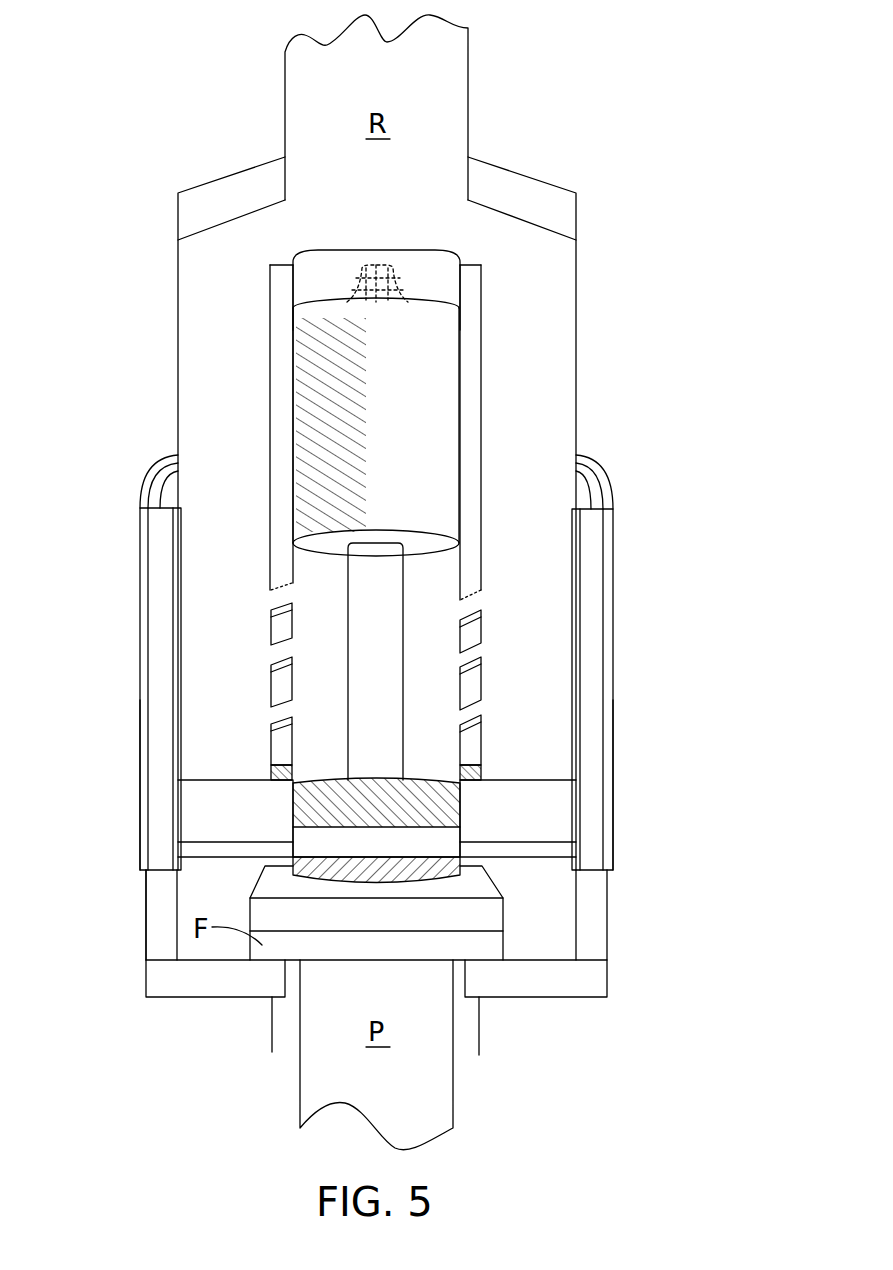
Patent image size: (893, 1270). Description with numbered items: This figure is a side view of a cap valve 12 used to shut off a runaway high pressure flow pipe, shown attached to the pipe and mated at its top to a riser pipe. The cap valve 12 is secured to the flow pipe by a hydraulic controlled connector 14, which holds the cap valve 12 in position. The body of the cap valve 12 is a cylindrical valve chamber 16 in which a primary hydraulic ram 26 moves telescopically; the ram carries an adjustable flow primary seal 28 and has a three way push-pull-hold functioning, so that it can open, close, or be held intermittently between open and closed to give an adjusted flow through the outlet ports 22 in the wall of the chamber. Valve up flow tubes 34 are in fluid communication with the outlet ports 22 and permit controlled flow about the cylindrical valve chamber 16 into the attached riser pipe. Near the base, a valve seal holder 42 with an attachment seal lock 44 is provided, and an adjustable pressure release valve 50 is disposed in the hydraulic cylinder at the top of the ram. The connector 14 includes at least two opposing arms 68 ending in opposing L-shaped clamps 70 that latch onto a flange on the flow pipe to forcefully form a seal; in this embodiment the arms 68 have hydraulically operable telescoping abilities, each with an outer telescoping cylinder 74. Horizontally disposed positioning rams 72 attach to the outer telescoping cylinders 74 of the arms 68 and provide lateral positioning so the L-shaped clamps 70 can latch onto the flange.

The cap valve 12 is at (641, 276).
The hydraulic controlled connector 14 is at (709, 755).
The cylindrical valve chamber 16 is at (462, 385).
The outlet ports 22 is at (482, 603).
The primary hydraulic ram 26 is at (392, 426).
The adjustable flow primary seal 28 is at (465, 800).
The valve up flow tubes 34 is at (539, 519).
The valve seal holder 42 is at (392, 860).
The attachment seal lock 44 is at (465, 877).
The adjustable pressure release valve 50 is at (378, 262).
The opposing arms 68 is at (157, 812).
The L-shaped clamps 70 is at (183, 997).
The horizontally disposed positioning rams 72 is at (270, 835).
The outer telescoping cylinder 74 is at (142, 605).